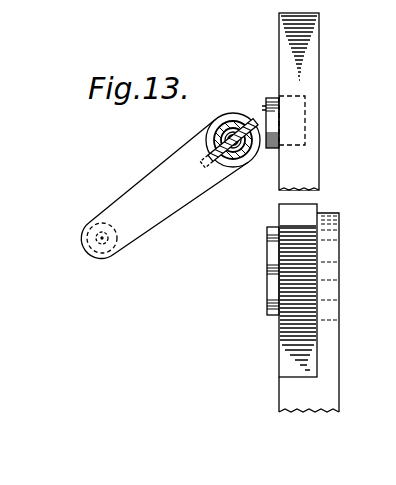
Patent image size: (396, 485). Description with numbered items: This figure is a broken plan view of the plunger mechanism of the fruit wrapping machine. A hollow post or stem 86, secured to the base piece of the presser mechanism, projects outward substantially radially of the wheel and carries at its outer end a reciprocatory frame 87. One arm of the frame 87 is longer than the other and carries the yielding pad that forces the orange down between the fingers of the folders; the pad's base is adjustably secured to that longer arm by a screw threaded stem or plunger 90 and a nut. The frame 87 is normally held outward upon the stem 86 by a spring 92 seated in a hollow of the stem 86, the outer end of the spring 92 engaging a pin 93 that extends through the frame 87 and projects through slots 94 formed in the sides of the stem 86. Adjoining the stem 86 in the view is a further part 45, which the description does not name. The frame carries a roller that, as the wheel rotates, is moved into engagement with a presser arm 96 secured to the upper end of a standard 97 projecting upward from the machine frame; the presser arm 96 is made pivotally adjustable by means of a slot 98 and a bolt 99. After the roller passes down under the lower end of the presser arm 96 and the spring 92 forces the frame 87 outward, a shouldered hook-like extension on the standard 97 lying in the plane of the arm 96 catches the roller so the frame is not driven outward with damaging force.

The shaft end 45 is at (275, 113).
The hollow post or stem 86 is at (212, 139).
The reciprocatory frame 87 is at (164, 188).
The screw threaded stem or plunger 90 is at (82, 233).
The spring 92 is at (232, 119).
The pin 93 is at (219, 128).
The slots 94 is at (206, 151).
The presser arm 96 is at (305, 157).
The standard 97 is at (328, 337).
The slot 98 is at (286, 232).
The bolt 99 is at (274, 253).